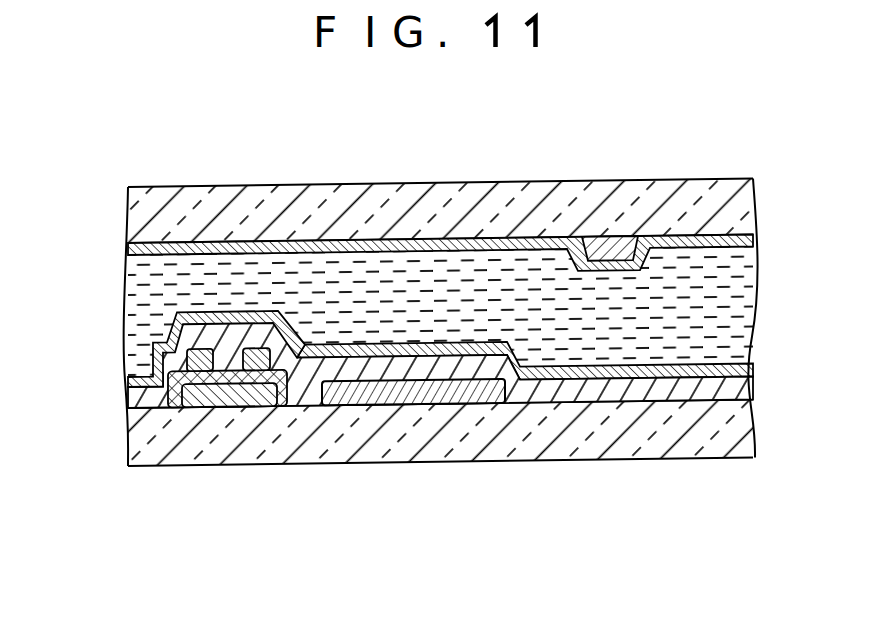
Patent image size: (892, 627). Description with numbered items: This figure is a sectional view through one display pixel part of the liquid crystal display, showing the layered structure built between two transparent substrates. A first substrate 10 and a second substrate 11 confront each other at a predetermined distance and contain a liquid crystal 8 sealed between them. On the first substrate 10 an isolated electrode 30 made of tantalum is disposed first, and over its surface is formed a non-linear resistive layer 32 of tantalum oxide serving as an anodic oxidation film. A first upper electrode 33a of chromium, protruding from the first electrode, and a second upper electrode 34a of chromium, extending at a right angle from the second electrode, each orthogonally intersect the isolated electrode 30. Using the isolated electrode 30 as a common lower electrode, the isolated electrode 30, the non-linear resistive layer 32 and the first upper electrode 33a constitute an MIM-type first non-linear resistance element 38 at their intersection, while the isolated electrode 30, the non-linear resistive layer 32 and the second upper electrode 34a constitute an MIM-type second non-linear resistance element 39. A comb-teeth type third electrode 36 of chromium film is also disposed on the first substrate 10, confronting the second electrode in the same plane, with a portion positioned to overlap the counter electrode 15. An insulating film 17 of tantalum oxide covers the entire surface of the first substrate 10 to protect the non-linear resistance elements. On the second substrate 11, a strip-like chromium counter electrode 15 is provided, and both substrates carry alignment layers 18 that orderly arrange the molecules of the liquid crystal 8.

The liquid crystal 8 is at (752, 302).
The first substrate 10 is at (740, 427).
The second substrate 11 is at (755, 198).
The counter electrode 15 is at (617, 252).
The insulating film 17 is at (753, 391).
The alignment layer 18 is at (755, 238).
The isolated electrode 30 is at (237, 400).
The non-linear resistive layer 32 is at (183, 398).
The first upper electrode 33a is at (283, 358).
The second upper electrode 34a is at (152, 343).
The comb-teeth type third electrode 36 is at (420, 395).
The first non-linear resistance element 38 is at (261, 333).
The second non-linear resistance element 39 is at (195, 333).